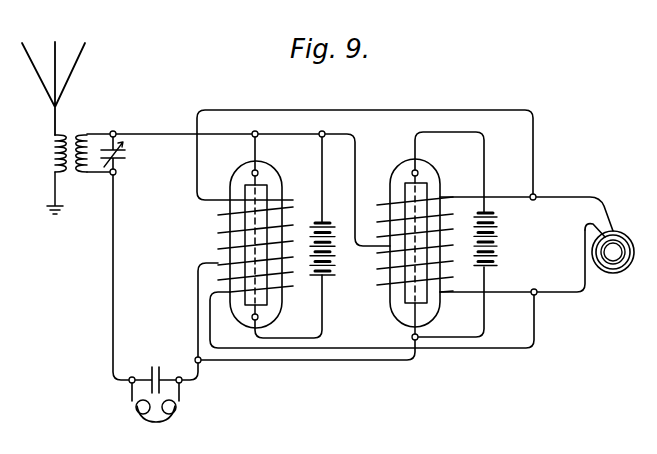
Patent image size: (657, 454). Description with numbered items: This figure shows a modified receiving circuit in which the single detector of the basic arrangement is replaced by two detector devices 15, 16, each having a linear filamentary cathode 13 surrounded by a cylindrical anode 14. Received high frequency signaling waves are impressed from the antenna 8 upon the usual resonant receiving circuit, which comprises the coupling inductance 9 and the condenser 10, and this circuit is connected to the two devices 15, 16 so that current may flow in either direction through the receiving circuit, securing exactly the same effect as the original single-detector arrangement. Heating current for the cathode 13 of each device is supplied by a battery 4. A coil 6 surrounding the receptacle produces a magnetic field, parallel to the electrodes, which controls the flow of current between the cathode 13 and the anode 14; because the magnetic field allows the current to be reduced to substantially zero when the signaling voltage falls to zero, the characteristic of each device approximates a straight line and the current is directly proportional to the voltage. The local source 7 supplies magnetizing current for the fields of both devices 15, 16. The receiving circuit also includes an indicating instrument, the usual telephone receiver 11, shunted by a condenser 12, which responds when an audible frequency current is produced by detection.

The battery 4 is at (498, 234).
The coil 6 is at (216, 226).
The local source 7 is at (621, 231).
The antenna 8 is at (55, 41).
The coupling inductance 9 is at (78, 133).
The condenser 10 is at (116, 133).
The telephone receiver 11 is at (175, 411).
The condenser 12 is at (153, 366).
The linear filamentary cathode 13 is at (253, 176).
The cylindrical anode 14 is at (240, 190).
The device 15 is at (274, 172).
The device 16 is at (436, 170).